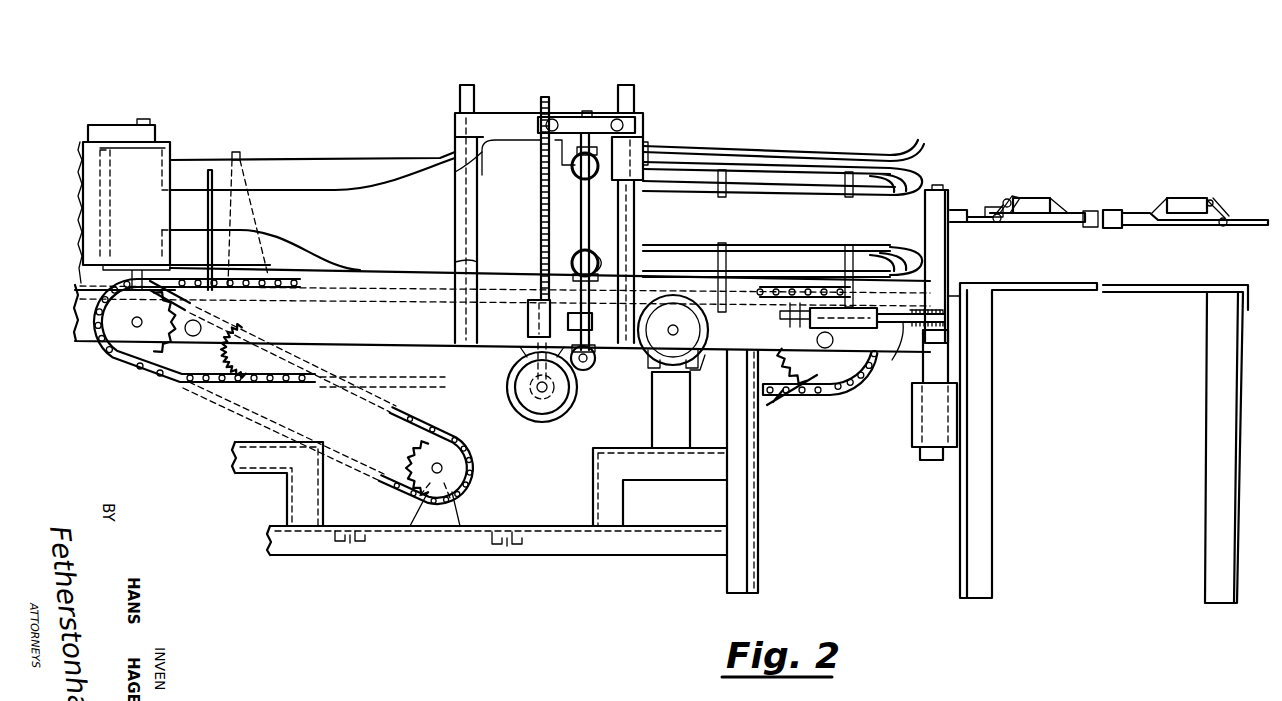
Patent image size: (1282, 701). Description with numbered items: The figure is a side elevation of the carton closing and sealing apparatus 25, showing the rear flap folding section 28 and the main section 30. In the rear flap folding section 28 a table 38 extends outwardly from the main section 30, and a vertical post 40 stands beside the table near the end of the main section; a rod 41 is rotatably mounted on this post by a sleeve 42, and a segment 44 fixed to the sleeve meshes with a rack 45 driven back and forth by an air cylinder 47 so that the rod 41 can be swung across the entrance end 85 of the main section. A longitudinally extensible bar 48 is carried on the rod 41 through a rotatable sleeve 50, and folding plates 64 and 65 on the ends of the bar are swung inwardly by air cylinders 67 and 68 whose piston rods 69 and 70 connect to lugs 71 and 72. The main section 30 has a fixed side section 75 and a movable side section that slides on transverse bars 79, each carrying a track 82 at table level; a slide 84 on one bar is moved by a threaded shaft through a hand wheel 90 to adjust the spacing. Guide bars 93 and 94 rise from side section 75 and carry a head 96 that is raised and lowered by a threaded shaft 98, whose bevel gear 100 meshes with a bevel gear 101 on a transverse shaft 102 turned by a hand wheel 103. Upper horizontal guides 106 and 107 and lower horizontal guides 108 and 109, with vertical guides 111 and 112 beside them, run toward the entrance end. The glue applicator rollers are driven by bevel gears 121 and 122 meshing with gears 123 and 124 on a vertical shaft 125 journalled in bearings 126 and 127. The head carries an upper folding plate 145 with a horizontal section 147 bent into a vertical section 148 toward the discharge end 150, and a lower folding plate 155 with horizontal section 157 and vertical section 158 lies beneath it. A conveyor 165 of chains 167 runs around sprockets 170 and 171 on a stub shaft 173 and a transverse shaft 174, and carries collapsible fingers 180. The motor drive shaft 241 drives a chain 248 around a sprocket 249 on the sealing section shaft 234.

The apparatus 25 is at (737, 118).
The rear flap folding section 28 is at (1160, 191).
The main section 30 is at (527, 214).
The table 38 is at (1053, 283).
The vertical post 40 is at (940, 186).
The rod 41 is at (996, 222).
The sleeve 42 is at (925, 236).
The segment 44 is at (948, 302).
The rack 45 is at (895, 347).
The air cylinder 47 is at (812, 328).
The longitudinally extensible bar 48 is at (1040, 224).
The sleeve 50 is at (1122, 213).
The folding plate 64 is at (981, 227).
The folding plate 65 is at (1233, 226).
The air cylinder 67 is at (1030, 199).
The air cylinder 68 is at (1195, 199).
The piston rod 69 is at (1010, 200).
The piston rod 70 is at (1212, 224).
The lug 71 is at (1002, 205).
The lug 72 is at (1228, 217).
The side section 75 is at (668, 150).
The transverse bars 79 is at (692, 366).
The track 82 is at (357, 270).
The slide 84 is at (650, 364).
The entrance end 85 is at (940, 259).
The hand wheel 90 is at (705, 326).
The guide bar 93 is at (455, 215).
The guide bar 94 is at (634, 221).
The head 96 is at (523, 118).
The threaded shaft 98 is at (543, 241).
The bevel gear 100 is at (508, 371).
The bevel gear 101 is at (508, 390).
The transverse shaft 102 is at (548, 391).
The hand wheel 103 is at (538, 420).
The upper horizontal guide 106 is at (896, 154).
The upper horizontal guide 107 is at (910, 170).
The lower horizontal guide 108 is at (822, 273).
The lower horizontal guide 109 is at (925, 282).
The vertical guide 111 is at (745, 188).
The vertical guide 112 is at (738, 248).
The bevel gear 121 is at (574, 179).
The bevel gear 122 is at (600, 264).
The bevel gear 123 is at (598, 153).
The bevel gear 124 is at (574, 268).
The vertical shaft 125 is at (582, 214).
The bearing 126 is at (600, 116).
The bearing 127 is at (568, 320).
The upper folding plate 145 is at (337, 167).
The horizontal section 147 is at (455, 174).
The vertical section 148 is at (280, 167).
The discharge end 150 is at (180, 148).
The lower folding plate 155 is at (258, 240).
The horizontal section 157 is at (472, 255).
The vertical section 158 is at (180, 228).
The conveyor 165 is at (842, 392).
The chain 167 is at (254, 385).
The sprocket 170 is at (810, 378).
The sprocket 171 is at (253, 343).
The stub shaft 173 is at (822, 347).
The transverse shaft 174 is at (203, 322).
The collapsible finger 180 is at (250, 213).
The shaft 234 is at (135, 328).
The drive shaft 241 is at (445, 467).
The chain 248 is at (466, 486).
The sprocket 249 is at (138, 345).